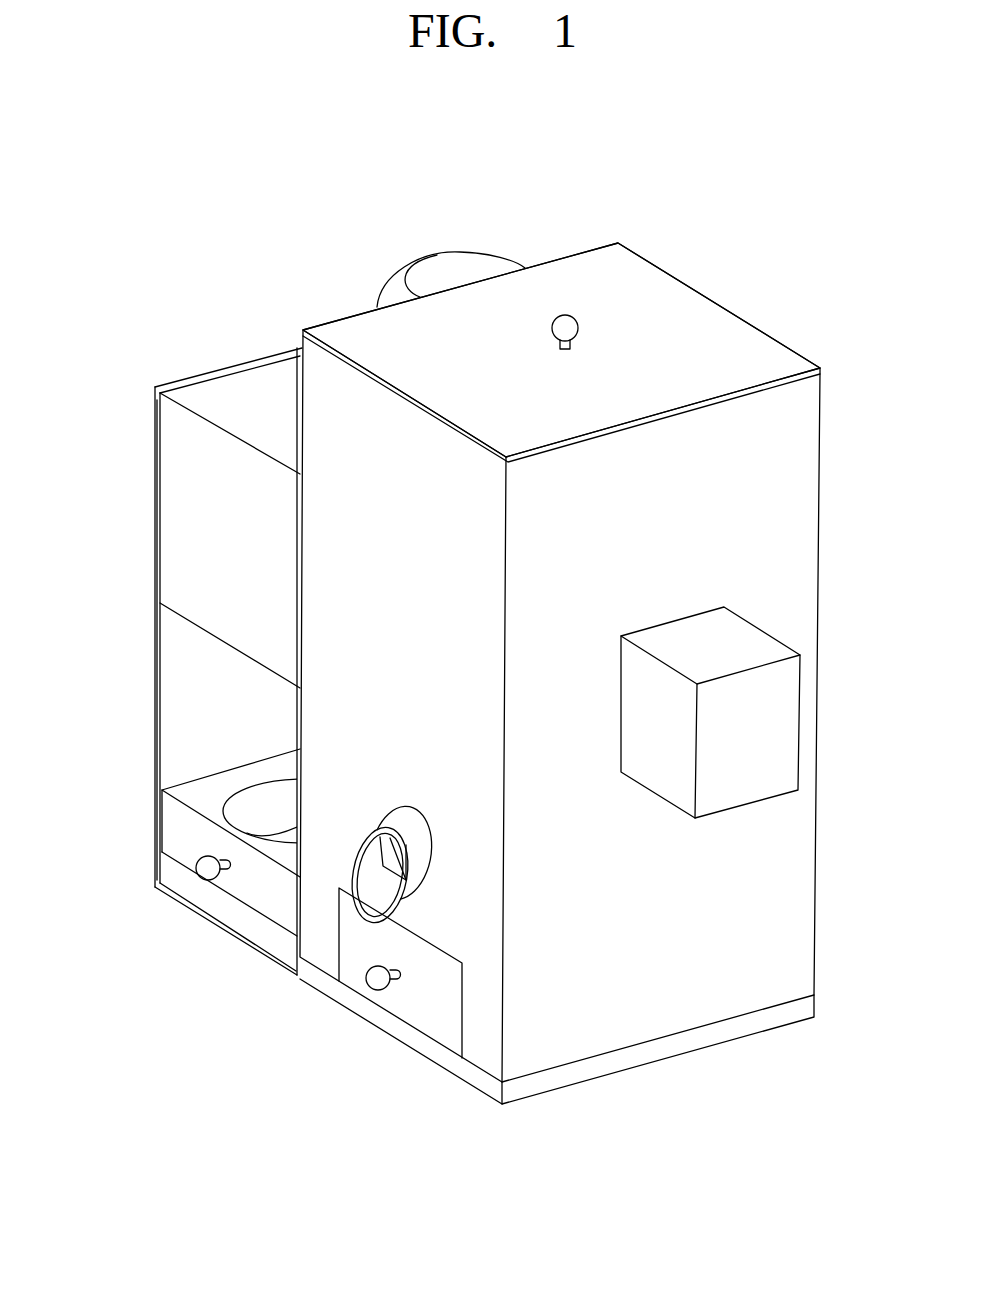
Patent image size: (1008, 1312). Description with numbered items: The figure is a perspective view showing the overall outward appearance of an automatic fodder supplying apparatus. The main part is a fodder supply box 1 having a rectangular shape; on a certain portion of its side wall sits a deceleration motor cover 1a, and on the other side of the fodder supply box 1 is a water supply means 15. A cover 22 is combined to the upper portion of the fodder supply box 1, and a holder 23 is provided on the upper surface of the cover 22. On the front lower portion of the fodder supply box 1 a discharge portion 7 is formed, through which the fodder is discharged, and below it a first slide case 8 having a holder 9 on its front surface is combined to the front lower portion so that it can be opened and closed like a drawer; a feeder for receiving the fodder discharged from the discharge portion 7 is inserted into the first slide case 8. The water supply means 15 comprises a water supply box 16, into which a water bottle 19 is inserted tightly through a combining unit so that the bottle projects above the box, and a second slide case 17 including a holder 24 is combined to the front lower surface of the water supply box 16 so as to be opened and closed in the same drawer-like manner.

The fodder supply box 1 is at (830, 412).
The deceleration motor cover 1a is at (757, 637).
The cover 22 is at (700, 316).
The holder 23 is at (563, 316).
The water bottle 19 is at (440, 262).
The water supply means 15 is at (146, 437).
The water supply box 16 is at (162, 521).
The second slide case 17 is at (168, 826).
The holder 24 is at (208, 880).
The discharge portion 7 is at (352, 867).
The holder 9 is at (378, 990).
The first slide case 8 is at (438, 1027).